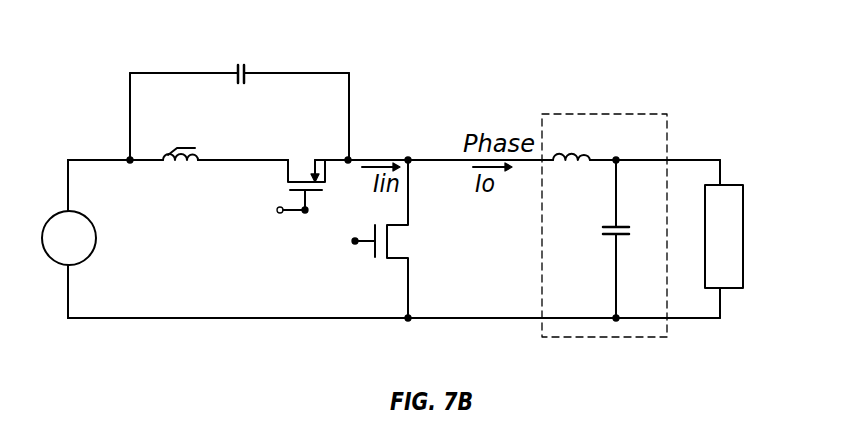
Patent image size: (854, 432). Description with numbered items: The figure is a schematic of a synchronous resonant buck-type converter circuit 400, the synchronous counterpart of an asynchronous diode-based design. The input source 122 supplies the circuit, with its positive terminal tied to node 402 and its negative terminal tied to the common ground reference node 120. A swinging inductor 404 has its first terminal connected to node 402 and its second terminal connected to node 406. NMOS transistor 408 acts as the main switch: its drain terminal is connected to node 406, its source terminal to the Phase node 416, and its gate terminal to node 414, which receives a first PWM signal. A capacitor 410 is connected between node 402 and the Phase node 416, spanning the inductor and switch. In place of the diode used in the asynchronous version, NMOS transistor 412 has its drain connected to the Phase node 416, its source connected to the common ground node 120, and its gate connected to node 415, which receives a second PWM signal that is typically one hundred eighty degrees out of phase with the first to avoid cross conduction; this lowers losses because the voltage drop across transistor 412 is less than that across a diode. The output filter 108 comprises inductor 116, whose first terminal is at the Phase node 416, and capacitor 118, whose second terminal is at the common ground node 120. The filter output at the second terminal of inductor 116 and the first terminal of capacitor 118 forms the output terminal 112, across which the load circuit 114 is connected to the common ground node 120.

The circuit 400 is at (659, 50).
The node 402 is at (97, 160).
The swinging inductor 404 is at (180, 162).
The node 406 is at (253, 158).
The NMOS transistor 408 is at (328, 168).
The capacitor 410 is at (248, 78).
The NMOS transistor 412 is at (402, 260).
The node 414 is at (279, 215).
The node 415 is at (356, 244).
The Phase node 416 is at (382, 157).
The output filter 108 is at (640, 113).
The output terminal 112 is at (720, 160).
The load circuit 114 is at (743, 250).
The inductor 116 is at (572, 164).
The capacitor 118 is at (614, 238).
The common ground reference node 120 is at (160, 320).
The input source 122 is at (97, 245).